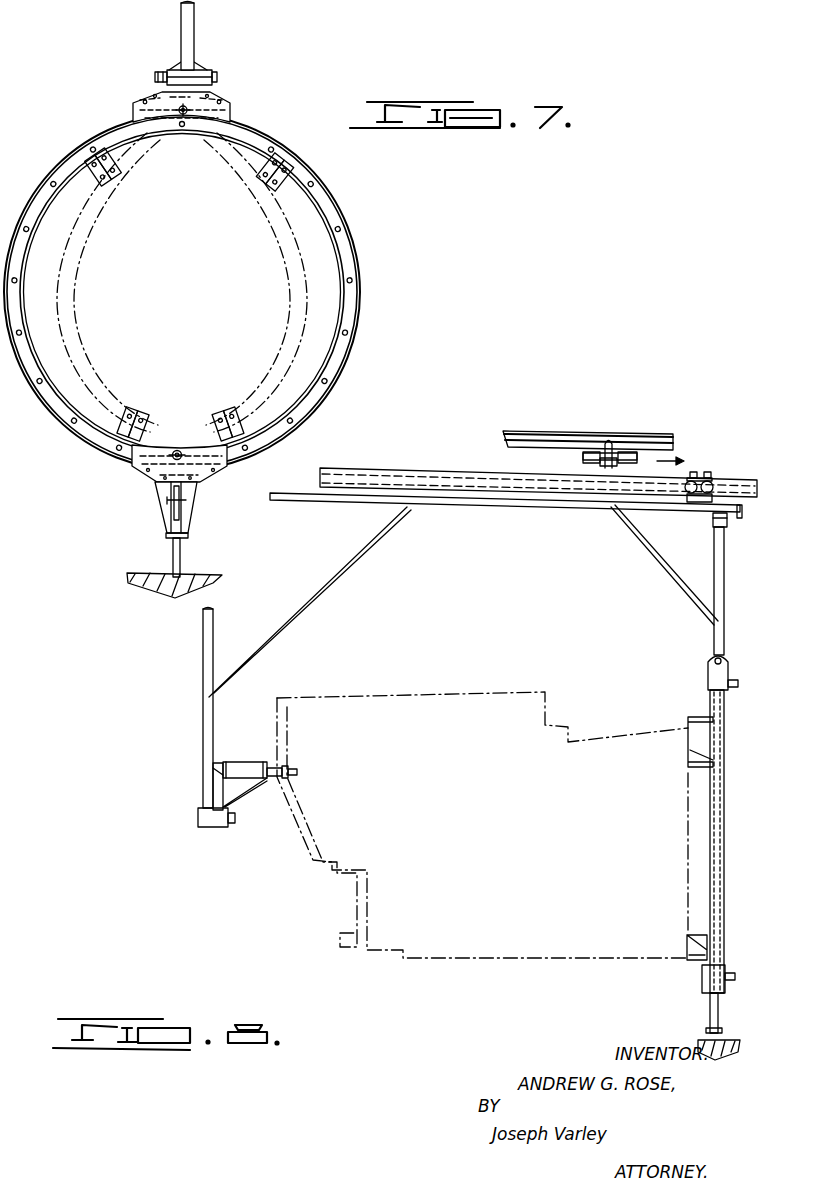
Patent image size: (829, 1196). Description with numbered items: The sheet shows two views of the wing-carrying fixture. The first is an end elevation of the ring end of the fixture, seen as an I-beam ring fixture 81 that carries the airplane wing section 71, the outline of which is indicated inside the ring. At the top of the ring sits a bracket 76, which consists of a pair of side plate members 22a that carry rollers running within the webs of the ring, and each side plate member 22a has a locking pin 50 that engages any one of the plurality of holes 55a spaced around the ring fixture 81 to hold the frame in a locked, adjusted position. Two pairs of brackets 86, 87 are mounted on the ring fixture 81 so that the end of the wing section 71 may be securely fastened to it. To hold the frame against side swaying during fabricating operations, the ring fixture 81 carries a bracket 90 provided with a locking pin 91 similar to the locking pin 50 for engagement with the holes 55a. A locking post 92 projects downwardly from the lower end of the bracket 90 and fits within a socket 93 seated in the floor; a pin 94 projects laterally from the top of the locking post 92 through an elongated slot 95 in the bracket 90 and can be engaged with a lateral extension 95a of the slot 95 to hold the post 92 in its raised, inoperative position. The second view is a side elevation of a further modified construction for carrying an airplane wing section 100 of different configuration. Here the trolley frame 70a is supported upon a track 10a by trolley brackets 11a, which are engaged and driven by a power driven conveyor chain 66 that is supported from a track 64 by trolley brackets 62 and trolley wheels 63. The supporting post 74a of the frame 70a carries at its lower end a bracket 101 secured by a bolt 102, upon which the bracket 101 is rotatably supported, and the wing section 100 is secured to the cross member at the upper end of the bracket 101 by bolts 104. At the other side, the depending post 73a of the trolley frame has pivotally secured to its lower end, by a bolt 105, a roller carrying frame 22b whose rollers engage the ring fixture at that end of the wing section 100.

In FIG. 7, the bracket 76 is at (186, 30).
In FIG. 7, the side plate member 22a is at (212, 100).
In FIG. 7, the locking pin 50 is at (184, 116).
In FIG. 7, the ring fixture 81 is at (312, 165).
In FIG. 7, the bracket 86 is at (100, 175).
In FIG. 7, the airplane wing section 71 is at (283, 255).
In FIG. 7, the holes 55a is at (322, 406).
In FIG. 7, the bracket 87 is at (214, 415).
In FIG. 7, the locking pin 91 is at (177, 451).
In FIG. 7, the bracket 90 is at (222, 471).
In FIG. 7, the pin 94 is at (165, 500).
In FIG. 7, the lateral extension 95a is at (190, 486).
In FIG. 7, the elongated slot 95 is at (174, 514).
In FIG. 7, the locking post 92 is at (181, 556).
In FIG. 7, the socket 93 is at (184, 580).
In FIG. 8, the track 10a is at (410, 470).
In FIG. 8, the track 64 is at (556, 434).
In FIG. 8, the trolley wheels 63 is at (607, 443).
In FIG. 8, the trolley bracket 62 is at (609, 458).
In FIG. 8, the power driven conveyor chain 66 is at (686, 468).
In FIG. 8, the trolley bracket 11a is at (708, 483).
In FIG. 8, the trolley frame 70a is at (442, 506).
In FIG. 8, the depending post 73a is at (713, 640).
In FIG. 8, the roller carrying frame 22b is at (722, 664).
In FIG. 8, the bolt 105 is at (708, 668).
In FIG. 8, the airplane wing section 100 is at (476, 708).
In FIG. 8, the supporting post 74a is at (204, 740).
In FIG. 8, the bolts 104 is at (280, 770).
In FIG. 8, the bracket 101 is at (218, 788).
In FIG. 8, the bolt 102 is at (233, 822).